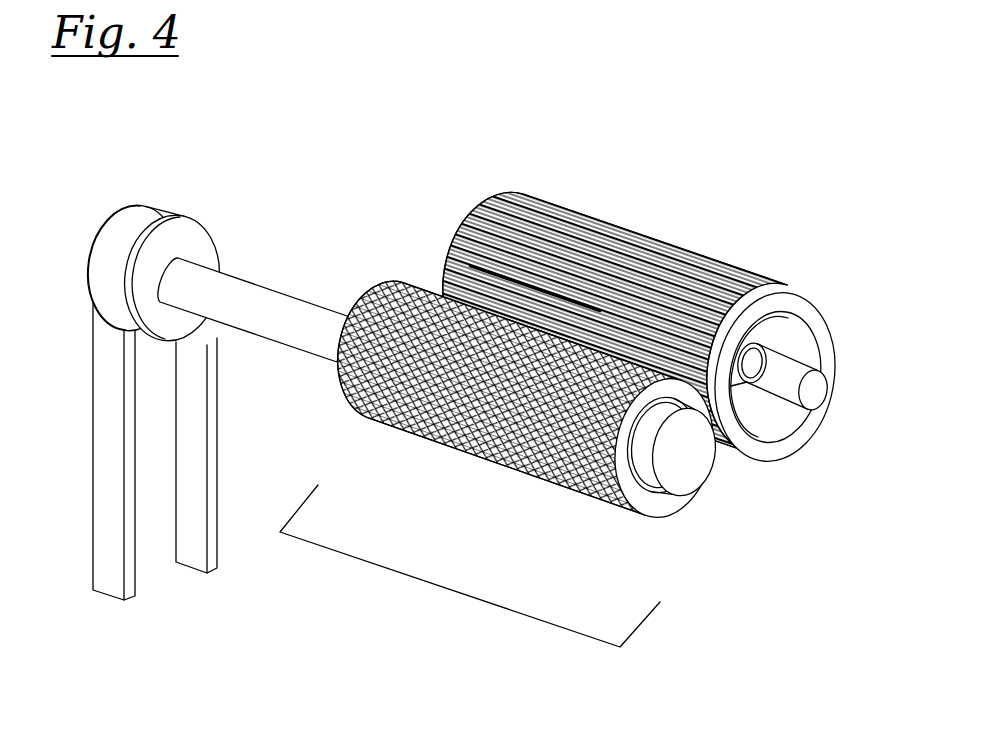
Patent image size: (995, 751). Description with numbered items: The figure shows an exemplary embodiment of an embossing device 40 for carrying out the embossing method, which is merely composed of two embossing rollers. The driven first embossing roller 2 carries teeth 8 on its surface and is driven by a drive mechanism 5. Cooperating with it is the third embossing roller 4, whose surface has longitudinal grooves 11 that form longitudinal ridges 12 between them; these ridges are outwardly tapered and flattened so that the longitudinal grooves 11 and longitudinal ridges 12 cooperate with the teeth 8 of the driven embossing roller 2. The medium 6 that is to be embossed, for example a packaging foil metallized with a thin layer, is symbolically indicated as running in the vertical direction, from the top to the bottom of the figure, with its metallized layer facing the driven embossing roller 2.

The first embossing roller 2 is at (372, 445).
The third embossing roller 4 is at (610, 259).
The drive mechanism 5 is at (147, 218).
The medium 6 is at (483, 294).
The teeth 8 is at (575, 495).
The longitudinal grooves 11 is at (728, 260).
The longitudinal ridges 12 is at (805, 288).
The device 40 is at (448, 592).